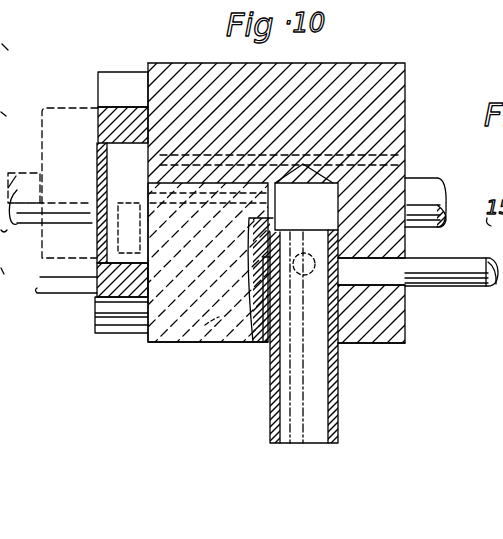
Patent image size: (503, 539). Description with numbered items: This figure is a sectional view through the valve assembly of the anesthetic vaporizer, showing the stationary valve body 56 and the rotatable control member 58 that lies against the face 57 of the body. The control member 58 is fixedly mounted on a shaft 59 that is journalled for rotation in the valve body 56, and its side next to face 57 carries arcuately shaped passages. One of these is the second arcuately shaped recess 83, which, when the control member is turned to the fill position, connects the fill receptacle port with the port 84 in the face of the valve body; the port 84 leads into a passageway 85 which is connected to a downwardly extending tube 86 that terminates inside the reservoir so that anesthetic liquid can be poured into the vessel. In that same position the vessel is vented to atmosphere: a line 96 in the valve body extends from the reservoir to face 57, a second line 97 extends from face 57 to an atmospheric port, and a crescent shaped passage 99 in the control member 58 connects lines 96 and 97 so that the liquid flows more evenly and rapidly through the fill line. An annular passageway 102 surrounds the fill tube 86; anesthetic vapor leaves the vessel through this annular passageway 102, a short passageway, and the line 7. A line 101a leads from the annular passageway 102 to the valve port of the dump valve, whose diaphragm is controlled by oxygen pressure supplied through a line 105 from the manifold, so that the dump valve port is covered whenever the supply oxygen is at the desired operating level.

The stationary valve body 56 is at (338, 63).
The face 57 is at (149, 66).
The rotatable control member 58 is at (135, 72).
The second arcuately shaped recess 83 is at (121, 157).
The crescent shaped passage 99 is at (125, 220).
The port 84 is at (150, 214).
The line 101a is at (300, 262).
The second line 97 is at (384, 154).
The shaft 59 is at (433, 178).
The line 105 is at (409, 258).
The line 7 is at (478, 287).
The line 96 is at (205, 325).
The passageway 85 is at (254, 340).
The downwardly extending tube 86 is at (270, 372).
The annular passageway 102 is at (341, 344).